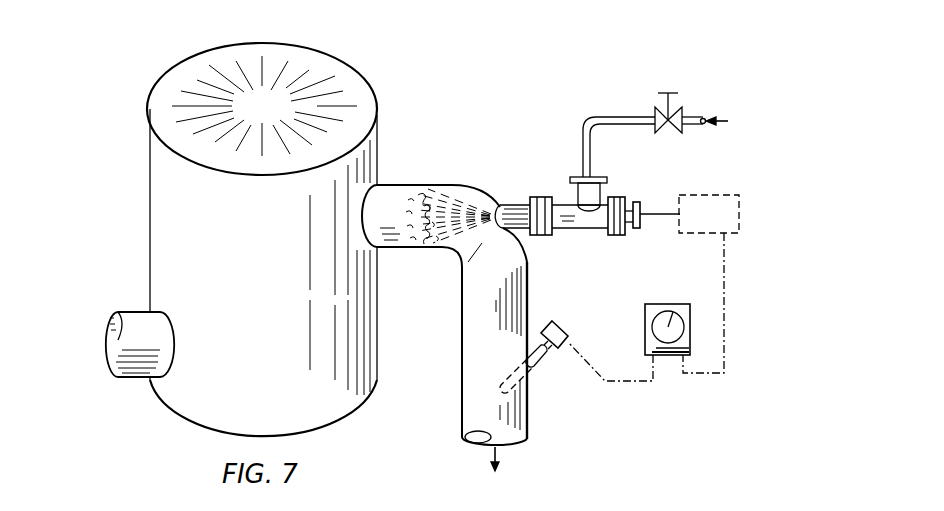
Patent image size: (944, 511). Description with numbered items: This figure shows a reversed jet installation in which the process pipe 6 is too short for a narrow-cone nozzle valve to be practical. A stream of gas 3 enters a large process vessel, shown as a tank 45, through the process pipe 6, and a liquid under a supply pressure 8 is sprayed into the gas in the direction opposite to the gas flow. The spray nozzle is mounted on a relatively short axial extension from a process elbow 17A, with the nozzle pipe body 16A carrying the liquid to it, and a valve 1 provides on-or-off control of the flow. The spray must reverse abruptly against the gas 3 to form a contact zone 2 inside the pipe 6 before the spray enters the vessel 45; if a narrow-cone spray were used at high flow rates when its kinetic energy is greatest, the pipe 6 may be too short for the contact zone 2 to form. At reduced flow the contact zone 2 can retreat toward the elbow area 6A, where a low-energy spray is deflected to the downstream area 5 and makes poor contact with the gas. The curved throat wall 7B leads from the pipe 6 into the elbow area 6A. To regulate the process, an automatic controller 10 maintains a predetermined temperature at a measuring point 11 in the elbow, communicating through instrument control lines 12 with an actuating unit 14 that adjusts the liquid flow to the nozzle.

The valve 1 is at (656, 95).
The contact zone 2 is at (420, 250).
The stream of gas 3 is at (100, 347).
The downstream area 5 is at (486, 462).
The process pipe 6 is at (400, 180).
The elbow area 6A is at (455, 280).
The chamber throat wall 7B is at (460, 182).
The liquid supply pressure 8 is at (725, 125).
The automatic controller 10 is at (645, 326).
The measuring point 11 is at (551, 351).
The instrument control lines 12 is at (687, 375).
The actuator unit 14 is at (708, 194).
The nozzle pipe body 16A is at (588, 237).
The axial extension from a process elbow 17A is at (527, 198).
The tank 45 is at (145, 247).